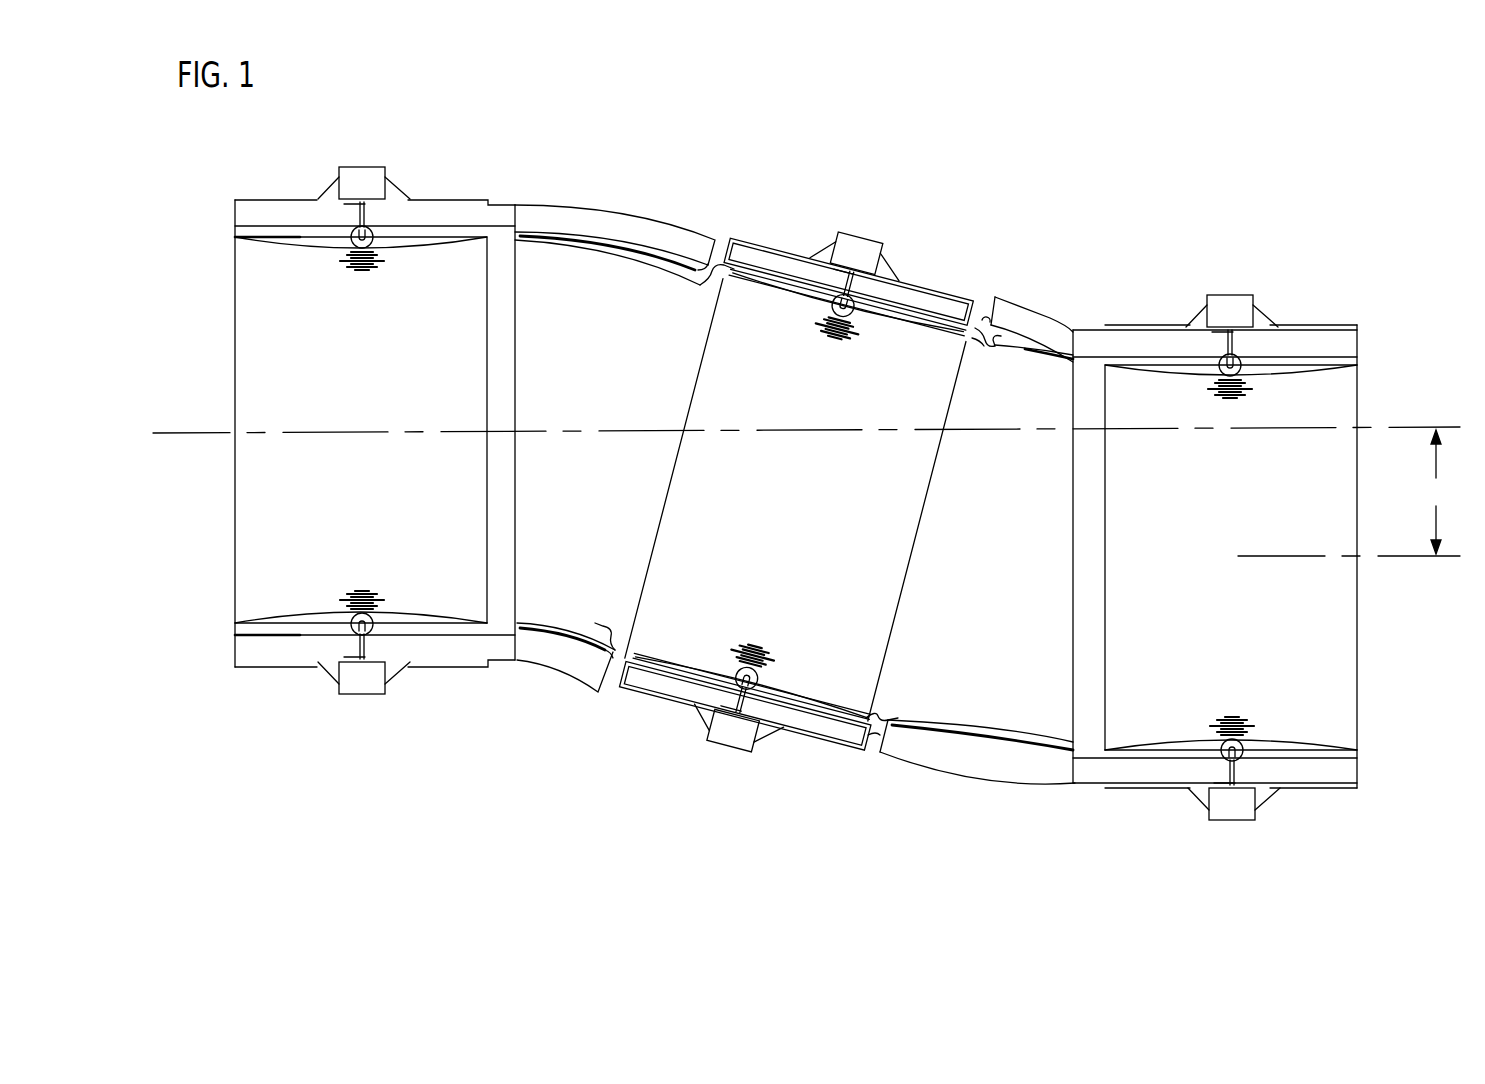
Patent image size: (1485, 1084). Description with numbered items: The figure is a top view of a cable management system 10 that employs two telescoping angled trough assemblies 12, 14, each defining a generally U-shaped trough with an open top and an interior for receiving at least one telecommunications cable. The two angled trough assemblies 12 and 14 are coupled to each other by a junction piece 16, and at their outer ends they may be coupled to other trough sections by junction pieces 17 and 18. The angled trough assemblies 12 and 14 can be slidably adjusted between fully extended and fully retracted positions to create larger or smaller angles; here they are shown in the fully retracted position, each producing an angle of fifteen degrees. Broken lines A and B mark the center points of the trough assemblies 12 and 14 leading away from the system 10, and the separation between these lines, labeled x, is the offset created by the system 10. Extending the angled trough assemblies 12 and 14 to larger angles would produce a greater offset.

The cable management system 10 is at (818, 474).
The angled trough assembly 12 is at (553, 210).
The angled trough assembly 14 is at (1005, 768).
The junction piece 16 is at (863, 255).
The junction piece 17 is at (1232, 304).
The junction piece 18 is at (355, 183).